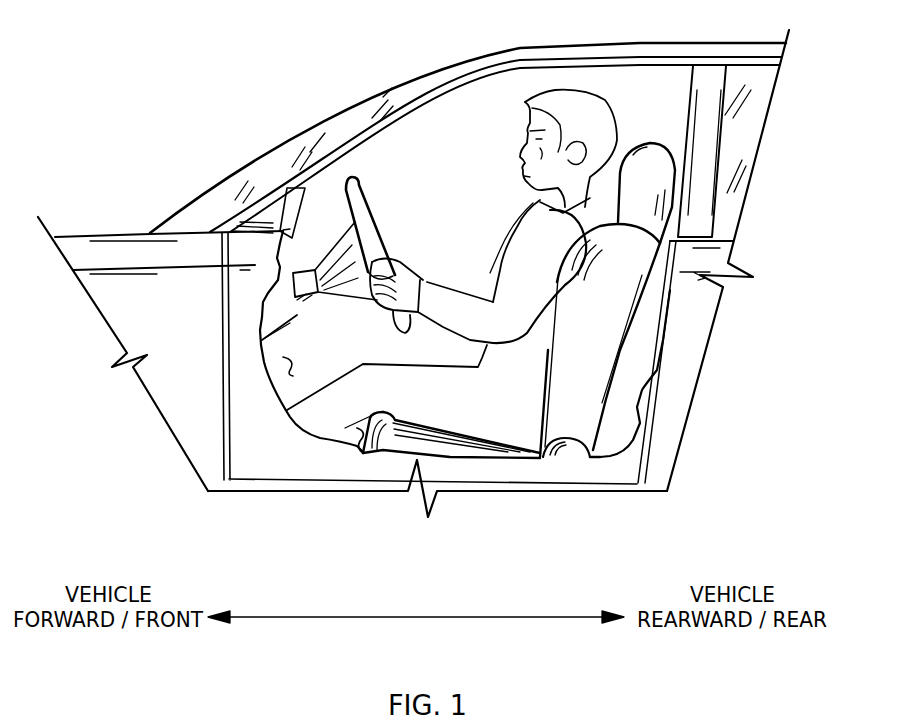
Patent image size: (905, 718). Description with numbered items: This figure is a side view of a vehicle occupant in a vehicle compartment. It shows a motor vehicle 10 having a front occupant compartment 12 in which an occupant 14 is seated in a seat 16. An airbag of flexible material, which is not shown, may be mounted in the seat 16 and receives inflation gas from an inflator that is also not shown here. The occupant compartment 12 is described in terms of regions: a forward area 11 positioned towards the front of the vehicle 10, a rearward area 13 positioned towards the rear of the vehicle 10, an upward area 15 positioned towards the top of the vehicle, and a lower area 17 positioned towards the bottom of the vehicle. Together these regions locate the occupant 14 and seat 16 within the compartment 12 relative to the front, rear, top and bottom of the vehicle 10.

The motor vehicle 10 is at (460, 52).
The forward area 11 is at (332, 228).
The front occupant compartment 12 is at (287, 358).
The rearward area 13 is at (652, 355).
The occupant 14 is at (550, 267).
The upward area 15 is at (477, 116).
The seat 16 is at (577, 375).
The lower area 17 is at (347, 441).